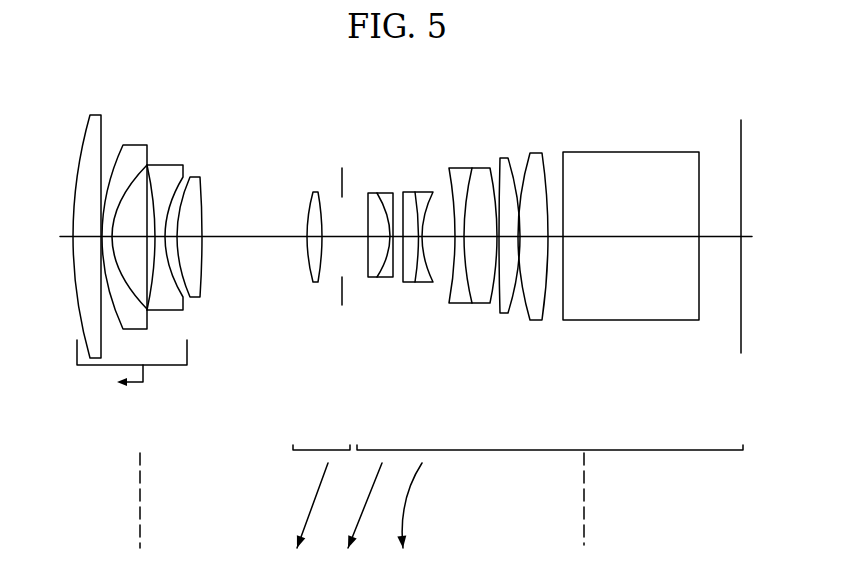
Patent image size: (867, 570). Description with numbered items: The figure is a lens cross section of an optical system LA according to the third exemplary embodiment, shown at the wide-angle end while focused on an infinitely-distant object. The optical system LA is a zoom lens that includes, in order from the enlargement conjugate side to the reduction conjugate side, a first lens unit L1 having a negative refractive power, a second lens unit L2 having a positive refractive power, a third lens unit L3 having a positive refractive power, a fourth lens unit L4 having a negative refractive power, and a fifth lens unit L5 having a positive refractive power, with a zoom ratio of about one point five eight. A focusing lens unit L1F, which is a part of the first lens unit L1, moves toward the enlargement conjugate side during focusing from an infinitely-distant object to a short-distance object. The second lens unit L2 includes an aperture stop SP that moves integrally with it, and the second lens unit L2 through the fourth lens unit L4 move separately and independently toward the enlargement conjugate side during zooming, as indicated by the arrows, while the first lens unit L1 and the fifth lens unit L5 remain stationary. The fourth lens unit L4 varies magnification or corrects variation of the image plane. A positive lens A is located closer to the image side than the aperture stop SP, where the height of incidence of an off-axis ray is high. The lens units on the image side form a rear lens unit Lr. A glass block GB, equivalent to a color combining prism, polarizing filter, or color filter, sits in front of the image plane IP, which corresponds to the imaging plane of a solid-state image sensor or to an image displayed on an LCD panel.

The optical system LA is at (743, 107).
The first lens unit L1 is at (205, 373).
The focusing lens unit L1F is at (102, 365).
The aperture stop SP is at (342, 178).
The second lens unit L2 is at (294, 373).
The third lens unit L3 is at (368, 373).
The fourth lens unit L4 is at (400, 373).
The fifth lens unit L5 is at (739, 373).
The positive lens A is at (537, 153).
The optical block GB is at (627, 152).
The image plane IP is at (741, 140).
The rear lens unit Lr is at (518, 464).